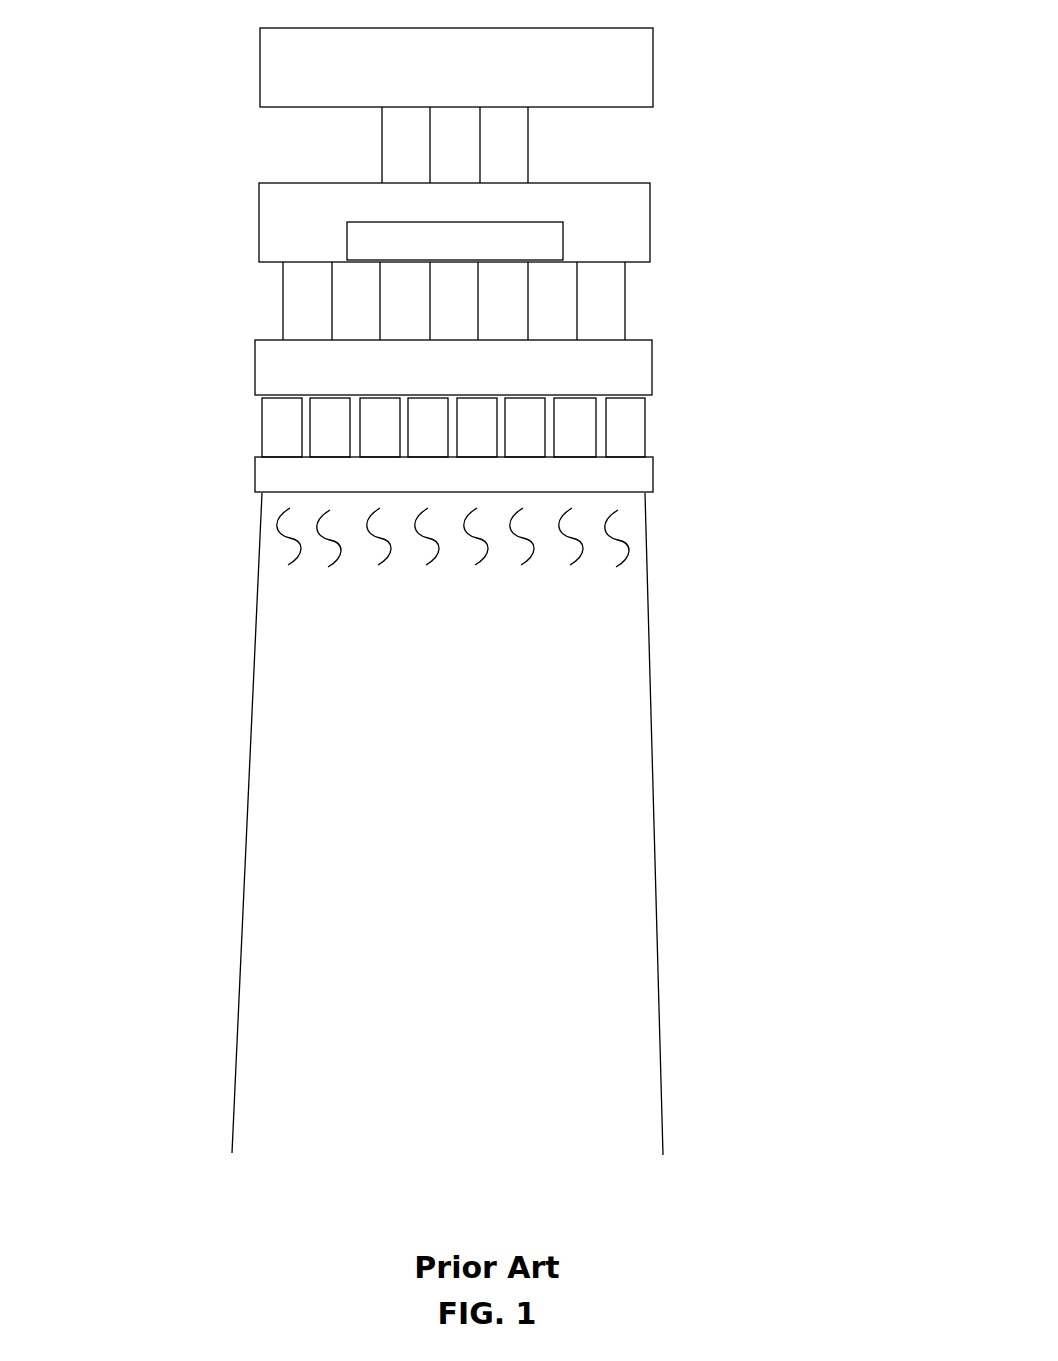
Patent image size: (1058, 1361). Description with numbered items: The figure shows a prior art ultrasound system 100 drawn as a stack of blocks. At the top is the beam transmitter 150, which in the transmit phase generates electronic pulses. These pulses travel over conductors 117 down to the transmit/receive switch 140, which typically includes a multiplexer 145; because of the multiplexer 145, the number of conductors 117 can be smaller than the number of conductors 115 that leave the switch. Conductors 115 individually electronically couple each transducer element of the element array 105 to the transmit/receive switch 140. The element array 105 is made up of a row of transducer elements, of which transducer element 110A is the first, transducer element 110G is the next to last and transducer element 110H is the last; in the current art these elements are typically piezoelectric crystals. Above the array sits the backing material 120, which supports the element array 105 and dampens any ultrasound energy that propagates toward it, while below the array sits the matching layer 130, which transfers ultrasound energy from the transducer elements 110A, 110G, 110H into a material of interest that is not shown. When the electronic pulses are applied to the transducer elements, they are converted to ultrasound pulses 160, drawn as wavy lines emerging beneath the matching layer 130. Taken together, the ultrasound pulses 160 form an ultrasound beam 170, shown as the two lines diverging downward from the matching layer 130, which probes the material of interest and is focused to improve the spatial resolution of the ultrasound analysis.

The ultrasound system 100 is at (462, 585).
The element array 105 is at (449, 424).
The transducer element 110A is at (262, 440).
The transducer element 110G is at (597, 448).
The transducer element 110H is at (645, 418).
The conductors 115 is at (283, 290).
The conductors 117 is at (382, 160).
The backing material 120 is at (652, 368).
The matching layer 130 is at (653, 482).
The transmit/receive switch 140 is at (650, 222).
The multiplexer 145 is at (455, 241).
The beam transmitter 150 is at (653, 70).
The ultrasound pulses 160 is at (303, 556).
The ultrasound beam 170 is at (253, 657).